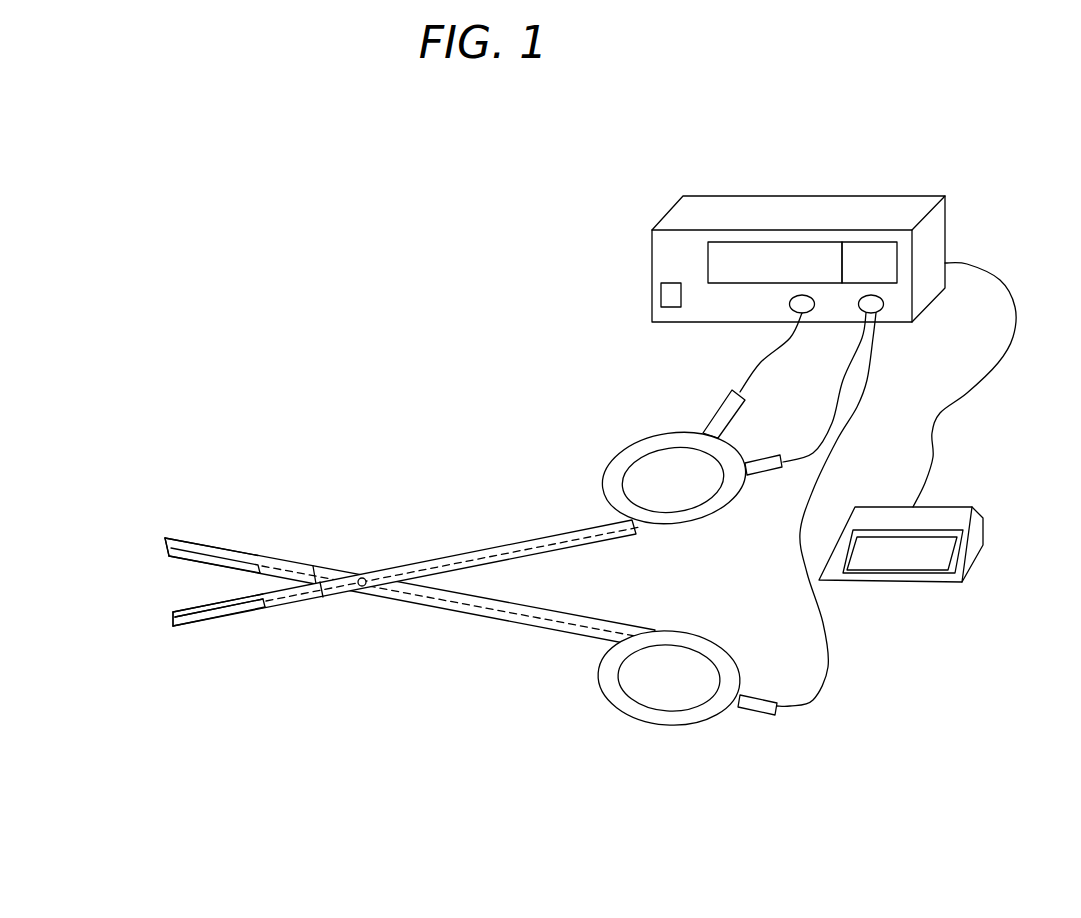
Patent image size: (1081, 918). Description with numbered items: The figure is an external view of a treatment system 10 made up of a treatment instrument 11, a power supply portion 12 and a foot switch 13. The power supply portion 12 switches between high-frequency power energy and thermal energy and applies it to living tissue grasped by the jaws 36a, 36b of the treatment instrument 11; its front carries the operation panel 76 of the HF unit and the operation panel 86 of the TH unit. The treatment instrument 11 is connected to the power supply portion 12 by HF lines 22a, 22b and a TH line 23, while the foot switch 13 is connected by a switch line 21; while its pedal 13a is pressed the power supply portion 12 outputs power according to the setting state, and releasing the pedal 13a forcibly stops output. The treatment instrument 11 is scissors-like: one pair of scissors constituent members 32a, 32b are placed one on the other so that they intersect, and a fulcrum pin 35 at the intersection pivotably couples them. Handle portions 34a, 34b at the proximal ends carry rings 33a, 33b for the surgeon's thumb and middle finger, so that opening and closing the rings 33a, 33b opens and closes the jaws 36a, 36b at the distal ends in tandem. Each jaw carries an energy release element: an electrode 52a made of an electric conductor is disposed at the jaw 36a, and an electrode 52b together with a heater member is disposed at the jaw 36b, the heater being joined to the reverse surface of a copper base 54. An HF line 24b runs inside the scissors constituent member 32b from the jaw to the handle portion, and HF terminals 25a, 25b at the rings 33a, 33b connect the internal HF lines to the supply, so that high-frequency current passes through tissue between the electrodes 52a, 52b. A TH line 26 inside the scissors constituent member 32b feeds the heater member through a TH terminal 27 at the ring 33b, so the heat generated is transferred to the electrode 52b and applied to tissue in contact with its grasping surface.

The treatment system 10 is at (502, 390).
The treatment instrument 11 is at (433, 683).
The power supply portion 12 is at (820, 196).
The foot switch 13 is at (960, 507).
The pedal 13a is at (872, 574).
The switch line 21 is at (1000, 368).
The HF line 22a is at (858, 402).
The HF line 22b is at (828, 425).
The TH line 23 is at (775, 354).
The HF line 24b is at (485, 552).
The HF terminal 25a is at (757, 694).
The HF terminal 25b is at (772, 474).
The TH line 26 is at (567, 552).
The TH terminal 27 is at (718, 410).
The scissors constituent member 32a is at (430, 607).
The scissors constituent member 32b is at (431, 557).
The ring 33a is at (615, 705).
The ring 33b is at (606, 460).
The handle portion 34a is at (700, 640).
The handle portion 34b is at (693, 523).
The fulcrum pin 35 is at (362, 591).
The jaw 36a is at (183, 541).
The jaw 36b is at (175, 626).
The electrode 52a is at (175, 556).
The electrode 52b is at (188, 609).
The base 54 is at (240, 614).
The operation panel 76 is at (871, 242).
The operation panel 86 is at (783, 242).